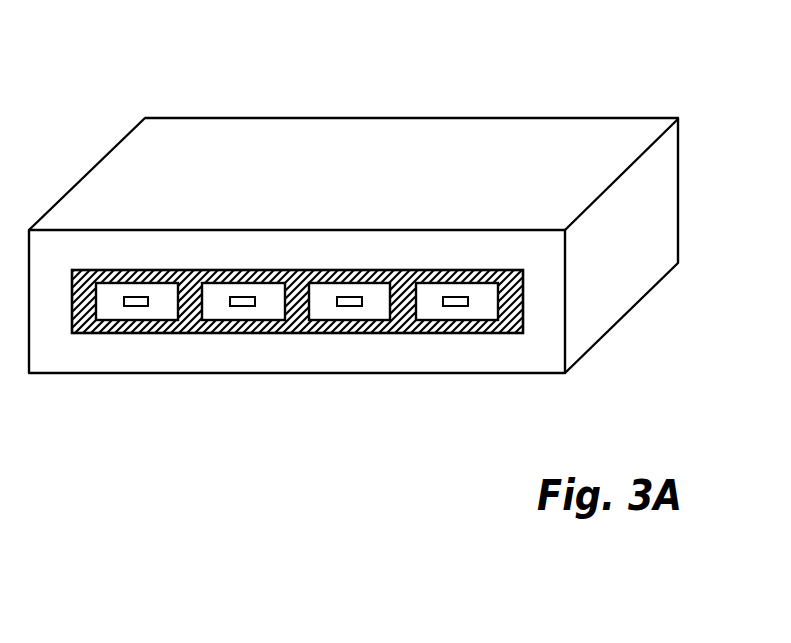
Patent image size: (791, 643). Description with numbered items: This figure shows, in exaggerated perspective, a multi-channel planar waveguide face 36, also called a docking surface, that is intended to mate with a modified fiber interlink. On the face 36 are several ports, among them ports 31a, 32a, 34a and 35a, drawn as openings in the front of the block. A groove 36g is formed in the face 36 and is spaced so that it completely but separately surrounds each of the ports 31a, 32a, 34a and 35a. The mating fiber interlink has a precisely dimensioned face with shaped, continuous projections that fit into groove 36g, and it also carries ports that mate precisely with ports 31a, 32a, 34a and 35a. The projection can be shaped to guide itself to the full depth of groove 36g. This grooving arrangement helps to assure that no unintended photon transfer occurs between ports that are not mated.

The port 31a is at (457, 296).
The port 32a is at (351, 296).
The port 34a is at (138, 296).
The fourth port opening 35a is at (244, 296).
The planar waveguide face 36 is at (315, 334).
The groove 36g is at (296, 272).